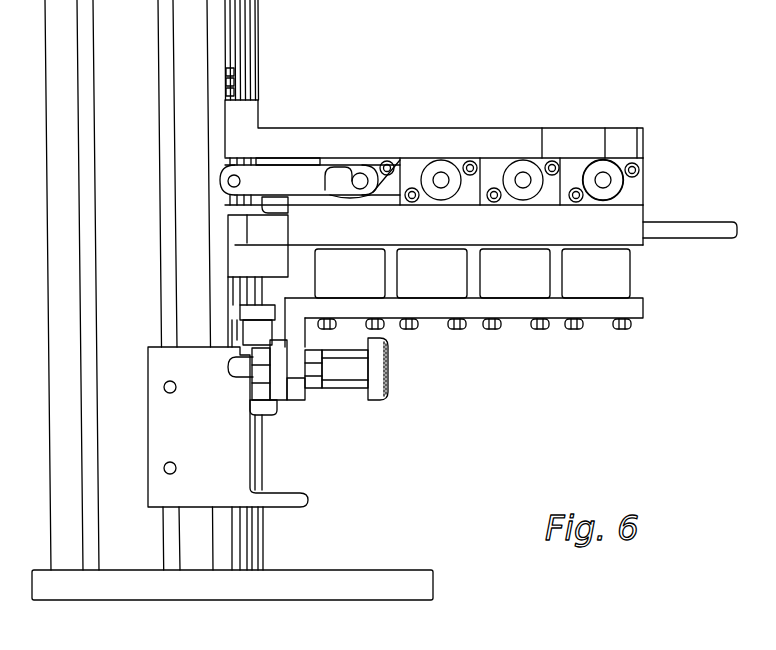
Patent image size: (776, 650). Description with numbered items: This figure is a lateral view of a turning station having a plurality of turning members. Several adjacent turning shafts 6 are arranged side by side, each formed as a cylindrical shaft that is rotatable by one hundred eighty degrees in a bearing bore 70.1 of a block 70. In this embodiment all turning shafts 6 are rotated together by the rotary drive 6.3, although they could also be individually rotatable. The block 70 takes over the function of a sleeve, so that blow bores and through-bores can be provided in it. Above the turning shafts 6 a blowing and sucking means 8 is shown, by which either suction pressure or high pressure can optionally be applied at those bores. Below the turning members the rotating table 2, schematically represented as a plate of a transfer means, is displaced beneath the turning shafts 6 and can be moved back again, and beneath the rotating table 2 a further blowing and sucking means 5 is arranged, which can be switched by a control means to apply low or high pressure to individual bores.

The rotating table 2 is at (625, 228).
The blowing and sucking means 5 is at (634, 280).
The turning shaft 6 is at (436, 168).
The rotary drive 6.3 is at (318, 178).
The blowing and sucking means 8 is at (647, 131).
The block 70 is at (636, 190).
The bearing bore 70.1 is at (619, 164).